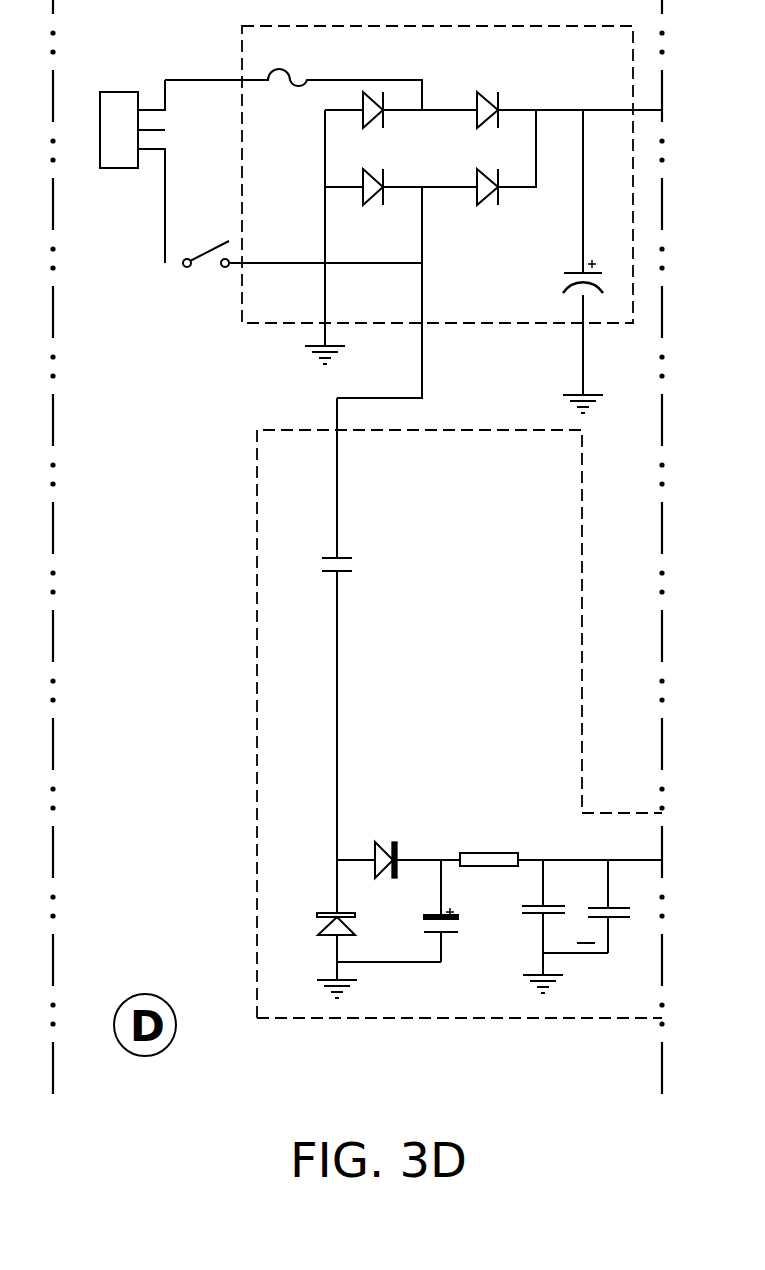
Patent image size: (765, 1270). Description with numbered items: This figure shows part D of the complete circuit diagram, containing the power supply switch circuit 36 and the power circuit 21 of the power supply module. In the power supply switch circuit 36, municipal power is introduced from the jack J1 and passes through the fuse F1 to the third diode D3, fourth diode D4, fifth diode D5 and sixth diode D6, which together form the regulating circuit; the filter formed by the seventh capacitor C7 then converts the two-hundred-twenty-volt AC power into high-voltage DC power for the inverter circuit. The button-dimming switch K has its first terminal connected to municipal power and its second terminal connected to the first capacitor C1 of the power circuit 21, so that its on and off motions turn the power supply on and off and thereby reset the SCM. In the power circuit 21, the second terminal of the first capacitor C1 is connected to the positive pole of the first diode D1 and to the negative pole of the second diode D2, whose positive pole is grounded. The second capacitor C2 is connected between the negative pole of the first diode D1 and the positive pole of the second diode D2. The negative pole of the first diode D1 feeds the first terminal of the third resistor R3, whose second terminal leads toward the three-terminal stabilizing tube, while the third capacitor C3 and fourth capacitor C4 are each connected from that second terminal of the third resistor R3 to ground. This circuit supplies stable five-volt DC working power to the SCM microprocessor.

The power supply switch circuit 36 is at (405, 219).
The power circuit 21 is at (407, 708).
The jack J1 is at (111, 160).
The button-dimming switch K is at (302, 223).
The fuse F1 is at (293, 81).
The third diode D3 is at (381, 118).
The fourth diode D4 is at (382, 195).
The fifth diode D5 is at (496, 118).
The sixth diode D6 is at (496, 195).
The seventh capacitor C7 is at (589, 261).
The first capacitor C1 is at (360, 547).
The first diode D1 is at (389, 860).
The second diode D2 is at (355, 955).
The third resistor R3 is at (489, 839).
The second capacitor C2 is at (462, 911).
The third capacitor C3 is at (543, 926).
The fourth capacitor C4 is at (603, 906).